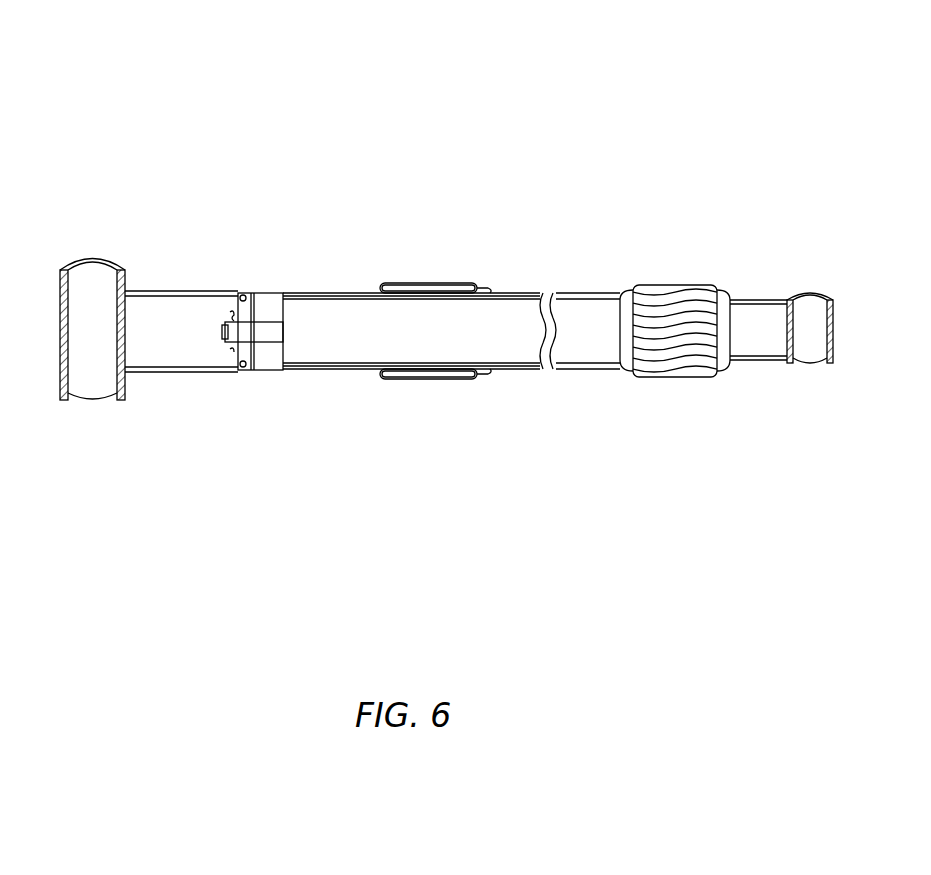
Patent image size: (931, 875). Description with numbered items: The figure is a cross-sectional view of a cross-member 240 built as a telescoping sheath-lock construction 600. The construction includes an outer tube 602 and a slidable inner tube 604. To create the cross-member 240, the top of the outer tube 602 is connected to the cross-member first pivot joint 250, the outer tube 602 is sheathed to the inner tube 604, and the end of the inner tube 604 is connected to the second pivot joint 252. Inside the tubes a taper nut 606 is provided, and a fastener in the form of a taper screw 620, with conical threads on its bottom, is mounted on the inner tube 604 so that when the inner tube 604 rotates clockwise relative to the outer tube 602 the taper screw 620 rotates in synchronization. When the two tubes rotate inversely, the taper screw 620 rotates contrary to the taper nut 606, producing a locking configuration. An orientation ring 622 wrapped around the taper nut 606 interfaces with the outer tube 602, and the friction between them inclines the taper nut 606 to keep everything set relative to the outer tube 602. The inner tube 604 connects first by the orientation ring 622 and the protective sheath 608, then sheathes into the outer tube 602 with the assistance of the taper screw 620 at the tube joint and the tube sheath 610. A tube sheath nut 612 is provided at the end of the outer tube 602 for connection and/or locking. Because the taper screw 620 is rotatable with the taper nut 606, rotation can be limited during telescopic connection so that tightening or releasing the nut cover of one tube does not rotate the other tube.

The telescoping sheath-lock construction 600 is at (322, 112).
The cross-member first pivot joint 250 is at (86, 382).
The second pivot joint 252 is at (803, 345).
The cross-member 240 is at (375, 425).
The outer tube 602 is at (140, 291).
The inner tube 604 is at (540, 293).
The taper nut 606 is at (170, 291).
The protective sheath 608 is at (405, 285).
The tube sheath 610 is at (276, 292).
The tube sheath nut 612 is at (492, 292).
The taper screw 620 is at (232, 313).
The orientation ring 622 is at (244, 292).